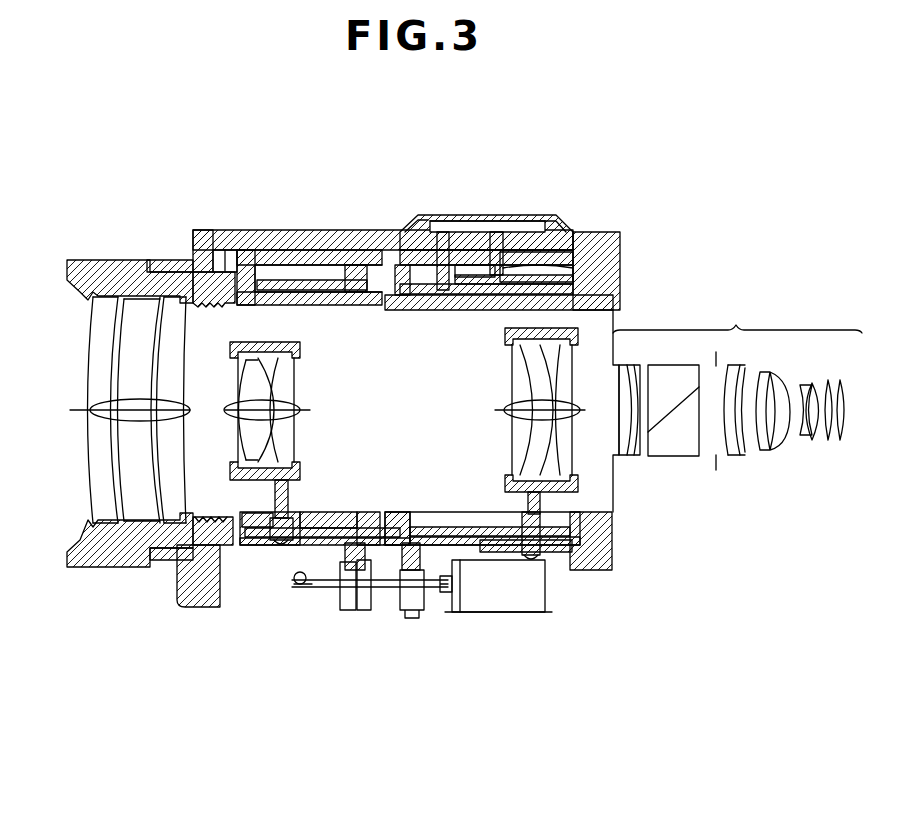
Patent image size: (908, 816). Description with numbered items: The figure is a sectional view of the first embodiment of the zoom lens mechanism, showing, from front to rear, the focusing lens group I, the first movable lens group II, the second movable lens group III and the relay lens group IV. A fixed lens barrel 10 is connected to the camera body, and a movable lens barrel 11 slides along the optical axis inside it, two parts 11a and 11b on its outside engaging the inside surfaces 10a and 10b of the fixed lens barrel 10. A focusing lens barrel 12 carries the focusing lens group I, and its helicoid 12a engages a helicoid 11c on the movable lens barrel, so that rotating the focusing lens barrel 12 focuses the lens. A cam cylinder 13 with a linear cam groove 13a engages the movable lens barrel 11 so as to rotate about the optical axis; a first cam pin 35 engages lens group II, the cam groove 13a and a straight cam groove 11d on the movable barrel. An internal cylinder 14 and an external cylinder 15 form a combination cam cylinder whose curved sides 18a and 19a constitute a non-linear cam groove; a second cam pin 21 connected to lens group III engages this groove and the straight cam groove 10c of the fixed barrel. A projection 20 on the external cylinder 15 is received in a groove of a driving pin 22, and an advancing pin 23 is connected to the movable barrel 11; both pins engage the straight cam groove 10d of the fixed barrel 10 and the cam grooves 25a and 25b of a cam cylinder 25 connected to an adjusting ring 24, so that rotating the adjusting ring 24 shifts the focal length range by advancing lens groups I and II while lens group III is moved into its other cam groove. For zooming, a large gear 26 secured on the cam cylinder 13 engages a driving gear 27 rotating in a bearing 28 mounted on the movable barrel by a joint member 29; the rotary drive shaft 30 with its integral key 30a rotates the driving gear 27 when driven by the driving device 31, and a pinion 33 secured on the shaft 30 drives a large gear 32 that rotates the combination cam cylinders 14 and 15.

The fixed lens barrel 10 is at (372, 242).
The inside surface of fixed lens barrel 10a is at (323, 250).
The inside surface of fixed lens barrel 10b is at (192, 267).
The straight cam groove 10c is at (426, 516).
The straight cam groove 10d is at (473, 270).
The movable lens barrel 11 is at (336, 306).
The part of movable lens barrel 11a is at (273, 252).
The part of movable lens barrel 11b is at (224, 250).
The helicoid 11c is at (243, 342).
The straight cam groove 11d is at (318, 512).
The focusing lens barrel 12 is at (85, 258).
The helicoid 12a is at (208, 306).
The cam cylinder 13 is at (360, 296).
The linear cam groove 13a is at (283, 527).
The internal cylinder 14 is at (447, 296).
The external cylinder 15 is at (484, 286).
The curved side of cam opening 18a is at (535, 558).
The curved side of cam opening 19a is at (560, 553).
The projection 20 is at (565, 270).
The second cam pin 21 is at (545, 496).
The driving pin 22 is at (512, 222).
The advancing pin 23 is at (411, 230).
The adjusting ring 24 is at (472, 220).
The cam cylinder 25 is at (536, 235).
The cam groove 25a is at (495, 240).
The cam groove 25b is at (443, 240).
The large gear 26 is at (336, 538).
The driving gear 27 is at (347, 611).
The bearing 28 is at (364, 611).
The joint member 29 is at (364, 556).
The rotary drive shaft 30 is at (382, 589).
The key 30a is at (294, 592).
The driving device 31 is at (498, 601).
The large gear 32 is at (418, 554).
The pinion 33 is at (411, 619).
The first cam pin 35 is at (289, 494).
The focusing lens group I is at (118, 410).
The first movable lens group II is at (275, 410).
The second movable lens group III is at (522, 410).
The relay lens group IV is at (737, 382).